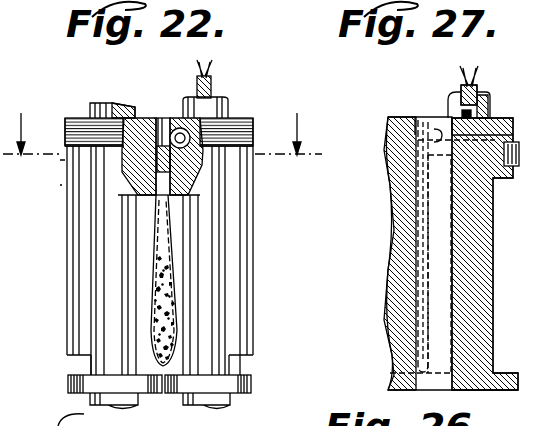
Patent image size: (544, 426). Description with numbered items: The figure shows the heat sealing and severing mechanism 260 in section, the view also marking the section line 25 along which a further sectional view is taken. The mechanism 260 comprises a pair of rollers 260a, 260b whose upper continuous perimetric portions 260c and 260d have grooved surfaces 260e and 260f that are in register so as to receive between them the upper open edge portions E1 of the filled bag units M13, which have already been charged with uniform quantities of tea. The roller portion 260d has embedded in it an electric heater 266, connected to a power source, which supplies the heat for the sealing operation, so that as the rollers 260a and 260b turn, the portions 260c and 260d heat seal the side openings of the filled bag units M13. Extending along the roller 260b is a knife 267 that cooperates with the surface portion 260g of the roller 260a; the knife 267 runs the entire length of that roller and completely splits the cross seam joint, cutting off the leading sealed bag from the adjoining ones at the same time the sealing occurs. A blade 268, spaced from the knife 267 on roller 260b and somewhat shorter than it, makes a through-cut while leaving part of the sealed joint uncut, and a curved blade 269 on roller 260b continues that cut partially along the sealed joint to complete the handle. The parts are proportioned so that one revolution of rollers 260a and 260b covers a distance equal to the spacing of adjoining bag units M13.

In FIG. 22, the heat sealing and severing mechanism 260 is at (262, 211).
In FIG. 22, the roller 260a is at (108, 310).
In FIG. 22, the roller 260b is at (205, 296).
In FIG. 22, the upper continuous perimetric portion 260c is at (66, 124).
In FIG. 22, the upper continuous perimetric portion 260d is at (255, 130).
In FIG. 22, the grooved surface 260e is at (65, 134).
In FIG. 22, the grooved surface 260f is at (254, 142).
In FIG. 22, the surface portion 260g is at (78, 279).
In FIG. 22, the electric heater 266 is at (176, 120).
In FIG. 27, the electric heater 266 is at (462, 96).
In FIG. 27, the knife 267 is at (440, 189).
In FIG. 22, the blade 268 is at (238, 196).
In FIG. 22, the curved blade 269 is at (160, 162).
In FIG. 27, the curved blade 269 is at (416, 134).
In FIG. 22, the section line 25 is at (162, 151).
In FIG. 22, the upper open edge portions E1 is at (158, 121).
In FIG. 22, the filled bag units M13 is at (180, 313).